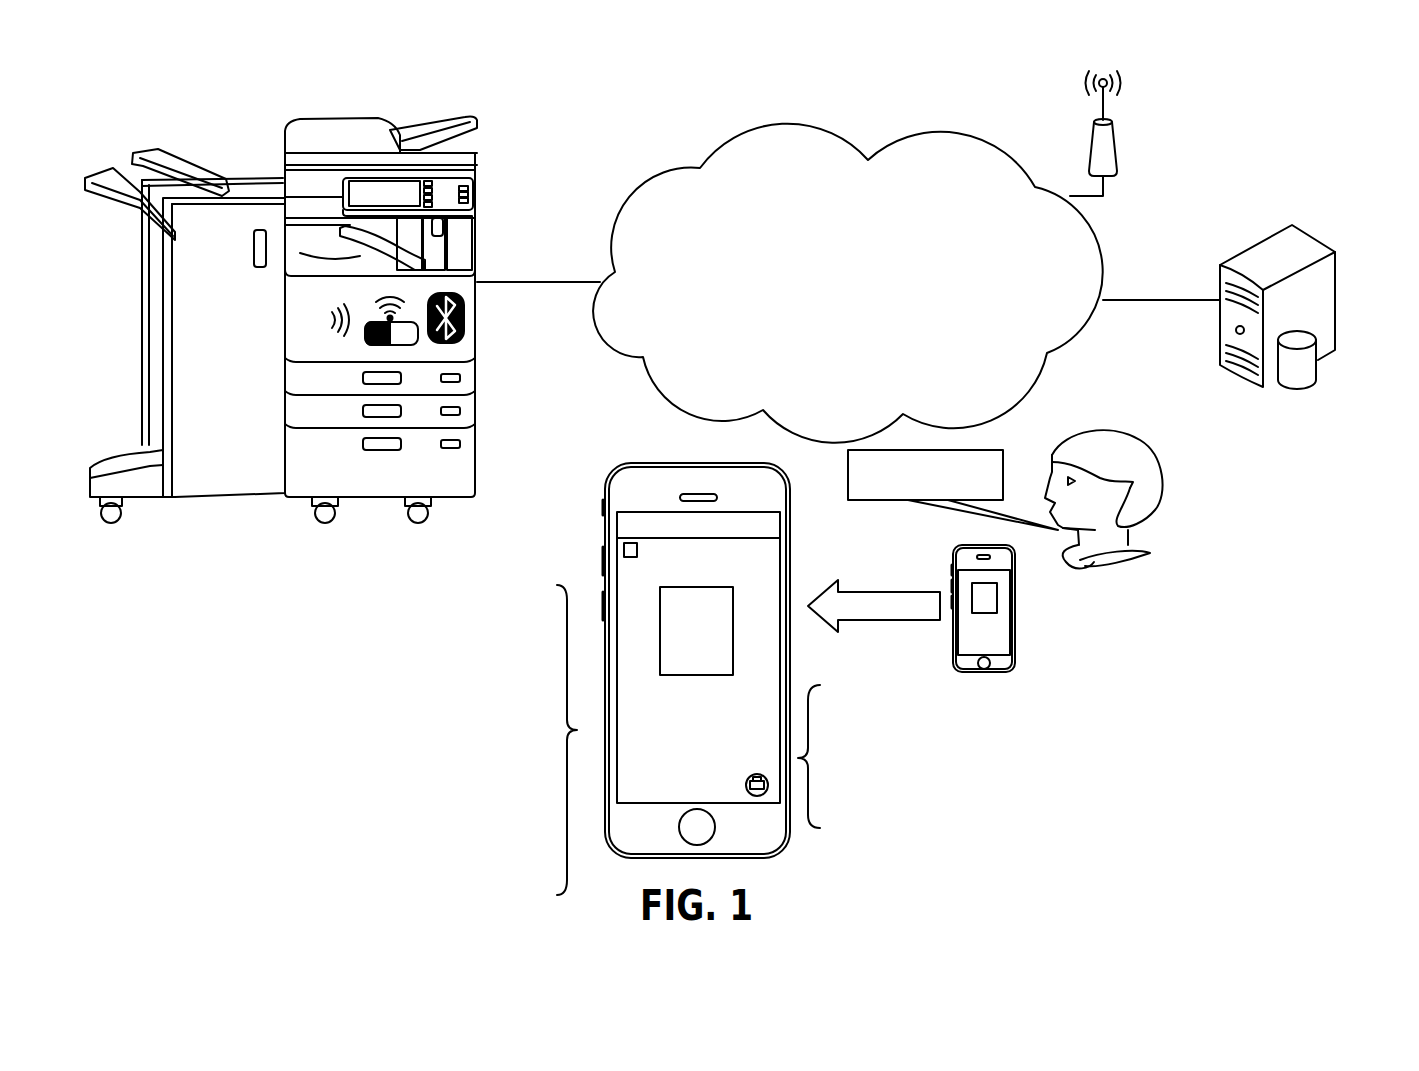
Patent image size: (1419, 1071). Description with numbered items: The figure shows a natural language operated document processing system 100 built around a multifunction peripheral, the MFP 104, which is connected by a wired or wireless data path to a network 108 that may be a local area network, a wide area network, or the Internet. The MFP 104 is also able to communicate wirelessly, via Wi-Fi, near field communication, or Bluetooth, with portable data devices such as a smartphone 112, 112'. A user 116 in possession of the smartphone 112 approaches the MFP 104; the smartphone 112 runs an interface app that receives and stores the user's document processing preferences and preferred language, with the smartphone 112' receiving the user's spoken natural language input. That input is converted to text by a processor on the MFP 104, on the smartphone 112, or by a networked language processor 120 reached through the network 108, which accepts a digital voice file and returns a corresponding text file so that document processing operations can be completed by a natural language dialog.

The natural language operated document processing system 100 is at (1192, 83).
The MFP 104 is at (477, 232).
The network 108 is at (893, 147).
The smartphone 112 is at (681, 688).
The smartphone 112' is at (956, 608).
The user 116 is at (1158, 508).
The networked language processor 120 is at (1335, 306).